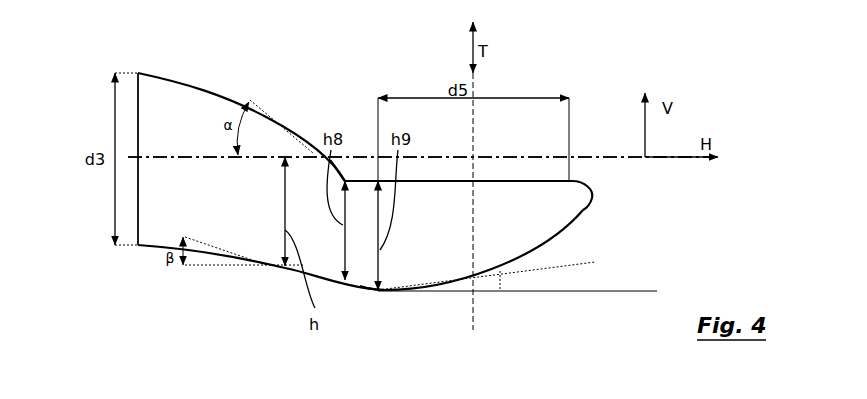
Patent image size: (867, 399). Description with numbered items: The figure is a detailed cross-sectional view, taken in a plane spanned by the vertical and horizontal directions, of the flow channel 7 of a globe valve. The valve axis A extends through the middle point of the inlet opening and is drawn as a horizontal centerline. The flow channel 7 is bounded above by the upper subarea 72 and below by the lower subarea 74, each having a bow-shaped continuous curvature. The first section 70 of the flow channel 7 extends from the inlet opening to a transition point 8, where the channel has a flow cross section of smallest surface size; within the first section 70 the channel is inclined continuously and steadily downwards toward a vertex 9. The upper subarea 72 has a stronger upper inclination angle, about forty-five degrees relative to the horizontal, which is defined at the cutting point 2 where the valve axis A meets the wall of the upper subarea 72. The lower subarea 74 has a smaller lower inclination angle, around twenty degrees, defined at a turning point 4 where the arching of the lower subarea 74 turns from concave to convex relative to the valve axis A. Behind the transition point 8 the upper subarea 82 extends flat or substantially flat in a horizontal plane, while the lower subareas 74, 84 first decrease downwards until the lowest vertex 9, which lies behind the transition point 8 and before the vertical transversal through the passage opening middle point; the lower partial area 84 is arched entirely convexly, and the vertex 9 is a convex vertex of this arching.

The cutting point 2 is at (348, 204).
The turning point 4 is at (267, 275).
The flow channel 7 is at (191, 159).
The transition point 8 is at (350, 173).
The vertex 9 is at (377, 298).
The first section 70 is at (187, 205).
The upper subarea 72 is at (231, 97).
The lower subarea 74 is at (213, 255).
The upper subarea 82 is at (581, 188).
The lower partial area 84 is at (523, 250).
The valve axis A is at (178, 157).